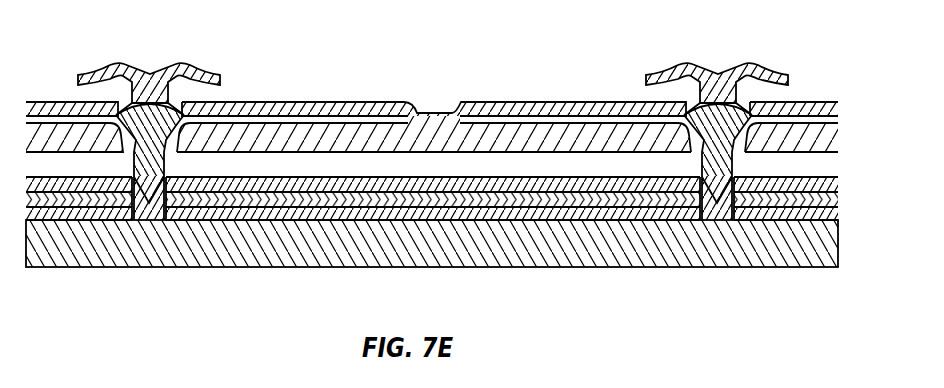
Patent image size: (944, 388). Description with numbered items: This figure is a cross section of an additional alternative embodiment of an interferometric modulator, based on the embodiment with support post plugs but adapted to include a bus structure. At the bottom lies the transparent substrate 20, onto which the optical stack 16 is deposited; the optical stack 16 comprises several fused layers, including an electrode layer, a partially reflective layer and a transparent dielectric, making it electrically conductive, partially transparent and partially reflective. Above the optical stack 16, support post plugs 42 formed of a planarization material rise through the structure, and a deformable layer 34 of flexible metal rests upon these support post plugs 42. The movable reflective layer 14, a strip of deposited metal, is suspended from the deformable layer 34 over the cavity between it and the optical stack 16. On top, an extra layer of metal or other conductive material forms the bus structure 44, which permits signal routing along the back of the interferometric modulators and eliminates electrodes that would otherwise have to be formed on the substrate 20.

The movable reflective layer 14 is at (370, 135).
The optical stack 16 is at (847, 173).
The transparent substrate 20 is at (553, 245).
The deformable layer 34 is at (480, 112).
The support post plug 42 is at (707, 142).
The bus structure 44 is at (120, 65).